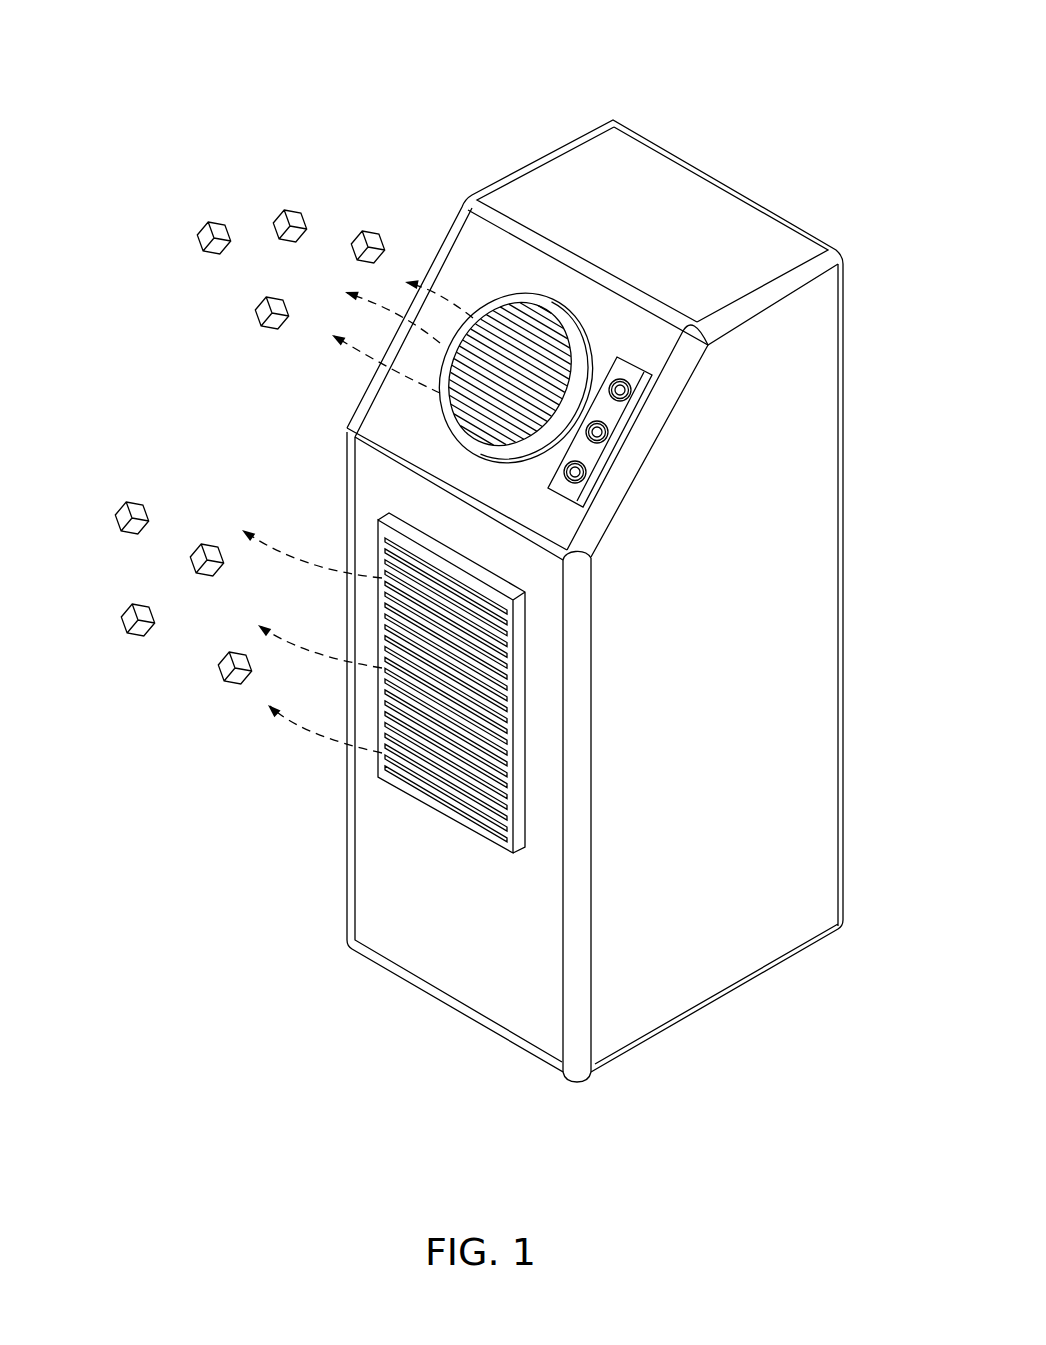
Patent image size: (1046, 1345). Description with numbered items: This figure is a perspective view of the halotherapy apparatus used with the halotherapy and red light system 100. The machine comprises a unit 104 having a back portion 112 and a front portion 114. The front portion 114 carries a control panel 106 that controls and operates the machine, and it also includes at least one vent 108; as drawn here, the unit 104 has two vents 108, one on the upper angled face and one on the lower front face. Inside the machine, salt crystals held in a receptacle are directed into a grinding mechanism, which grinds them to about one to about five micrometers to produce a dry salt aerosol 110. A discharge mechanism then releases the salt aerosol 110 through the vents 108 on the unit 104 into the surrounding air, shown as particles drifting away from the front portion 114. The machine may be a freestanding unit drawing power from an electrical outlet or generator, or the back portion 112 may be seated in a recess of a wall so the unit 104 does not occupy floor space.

The halotherapy and red light system 100 is at (180, 68).
The unit 104 is at (393, 755).
The control panel 106 is at (615, 418).
The vent 108 is at (573, 340).
The salt aerosol 110 is at (213, 422).
The back portion 112 is at (654, 596).
The front portion 114 is at (452, 382).